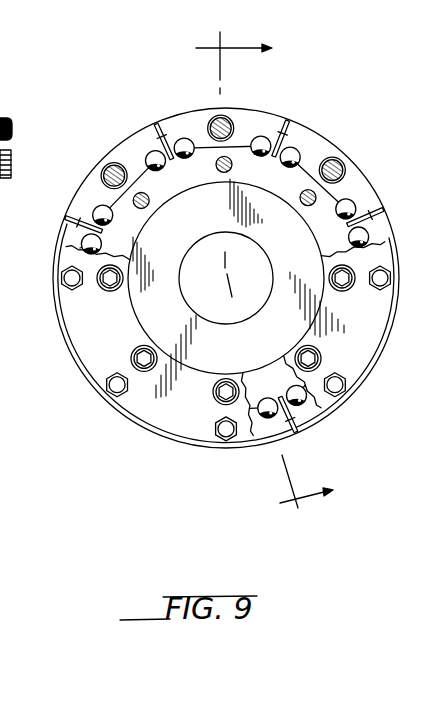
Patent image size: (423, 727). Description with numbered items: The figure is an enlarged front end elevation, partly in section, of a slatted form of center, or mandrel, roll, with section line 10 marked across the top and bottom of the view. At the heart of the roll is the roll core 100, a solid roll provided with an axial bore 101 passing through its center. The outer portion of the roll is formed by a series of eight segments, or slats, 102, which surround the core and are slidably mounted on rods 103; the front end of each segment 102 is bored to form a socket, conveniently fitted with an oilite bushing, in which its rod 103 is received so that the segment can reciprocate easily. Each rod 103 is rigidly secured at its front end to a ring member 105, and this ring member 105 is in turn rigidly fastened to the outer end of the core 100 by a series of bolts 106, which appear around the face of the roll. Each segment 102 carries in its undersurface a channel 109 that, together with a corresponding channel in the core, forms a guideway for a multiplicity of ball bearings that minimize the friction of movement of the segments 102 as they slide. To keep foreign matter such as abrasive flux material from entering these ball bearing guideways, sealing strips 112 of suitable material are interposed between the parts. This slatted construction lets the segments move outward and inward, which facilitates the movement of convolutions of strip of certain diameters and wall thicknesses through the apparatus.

The section line 10- 10 is at (273, 270).
The roll core 100 is at (0, 197).
The axial bore 101 is at (257, 250).
The segment 102 is at (130, 141).
The rod 103 is at (101, 163).
The ring member 105 is at (82, 351).
The bolt 106 is at (11, 160).
The channel 109 is at (95, 206).
The sealing strip 112 is at (75, 223).